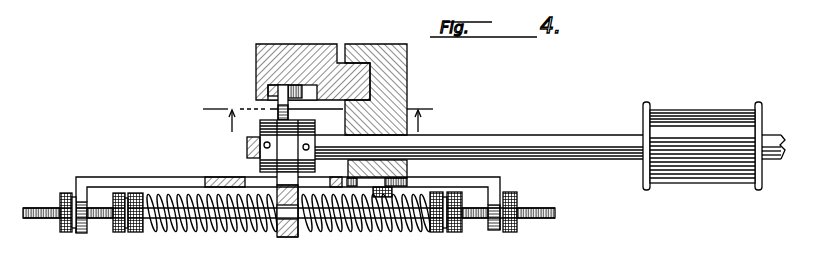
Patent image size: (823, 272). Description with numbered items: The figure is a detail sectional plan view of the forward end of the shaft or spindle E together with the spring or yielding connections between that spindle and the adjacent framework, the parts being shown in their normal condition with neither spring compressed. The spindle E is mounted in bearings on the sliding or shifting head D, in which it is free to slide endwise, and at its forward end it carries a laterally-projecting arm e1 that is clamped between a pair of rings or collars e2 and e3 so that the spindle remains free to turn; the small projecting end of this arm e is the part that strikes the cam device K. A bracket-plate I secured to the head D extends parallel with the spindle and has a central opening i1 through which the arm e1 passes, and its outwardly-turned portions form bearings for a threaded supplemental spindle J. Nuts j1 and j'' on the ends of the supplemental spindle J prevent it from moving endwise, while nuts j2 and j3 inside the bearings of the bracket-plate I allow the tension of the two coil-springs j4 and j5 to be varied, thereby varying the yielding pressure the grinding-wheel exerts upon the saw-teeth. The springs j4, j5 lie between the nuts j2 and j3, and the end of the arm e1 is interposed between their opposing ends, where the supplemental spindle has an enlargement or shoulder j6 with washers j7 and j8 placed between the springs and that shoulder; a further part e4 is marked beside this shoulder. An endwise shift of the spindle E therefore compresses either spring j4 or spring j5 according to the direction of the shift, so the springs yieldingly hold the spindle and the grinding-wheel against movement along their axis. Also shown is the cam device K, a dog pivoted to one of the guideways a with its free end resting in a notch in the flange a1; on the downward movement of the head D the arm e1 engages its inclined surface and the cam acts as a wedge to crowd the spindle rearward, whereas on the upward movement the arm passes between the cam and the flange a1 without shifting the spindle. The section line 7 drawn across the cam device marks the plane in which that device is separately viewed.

The cam device K is at (276, 88).
The guideway a is at (349, 75).
The flange a1 is at (263, 90).
The arm e1 is at (280, 105).
The shifting head D is at (397, 82).
The section line 7- 7 is at (316, 117).
The ring or collar e2 is at (262, 128).
The ring or collar e3 is at (308, 138).
The shaft or spindle E is at (503, 143).
The arm e is at (674, 122).
The bracket-plate I is at (130, 178).
The central opening i1 is at (258, 182).
The supplemental spindle J is at (107, 233).
The nut j'' is at (64, 229).
The nut j2 is at (128, 236).
The coil-spring j4 is at (218, 228).
The coil-spring j5 is at (360, 222).
The washer j7 is at (277, 218).
The enlargement or shoulder j6 is at (282, 236).
The washer j8 is at (298, 227).
The stem lower end e4 is at (292, 233).
The nut j3 is at (442, 235).
The nut j1 is at (517, 233).